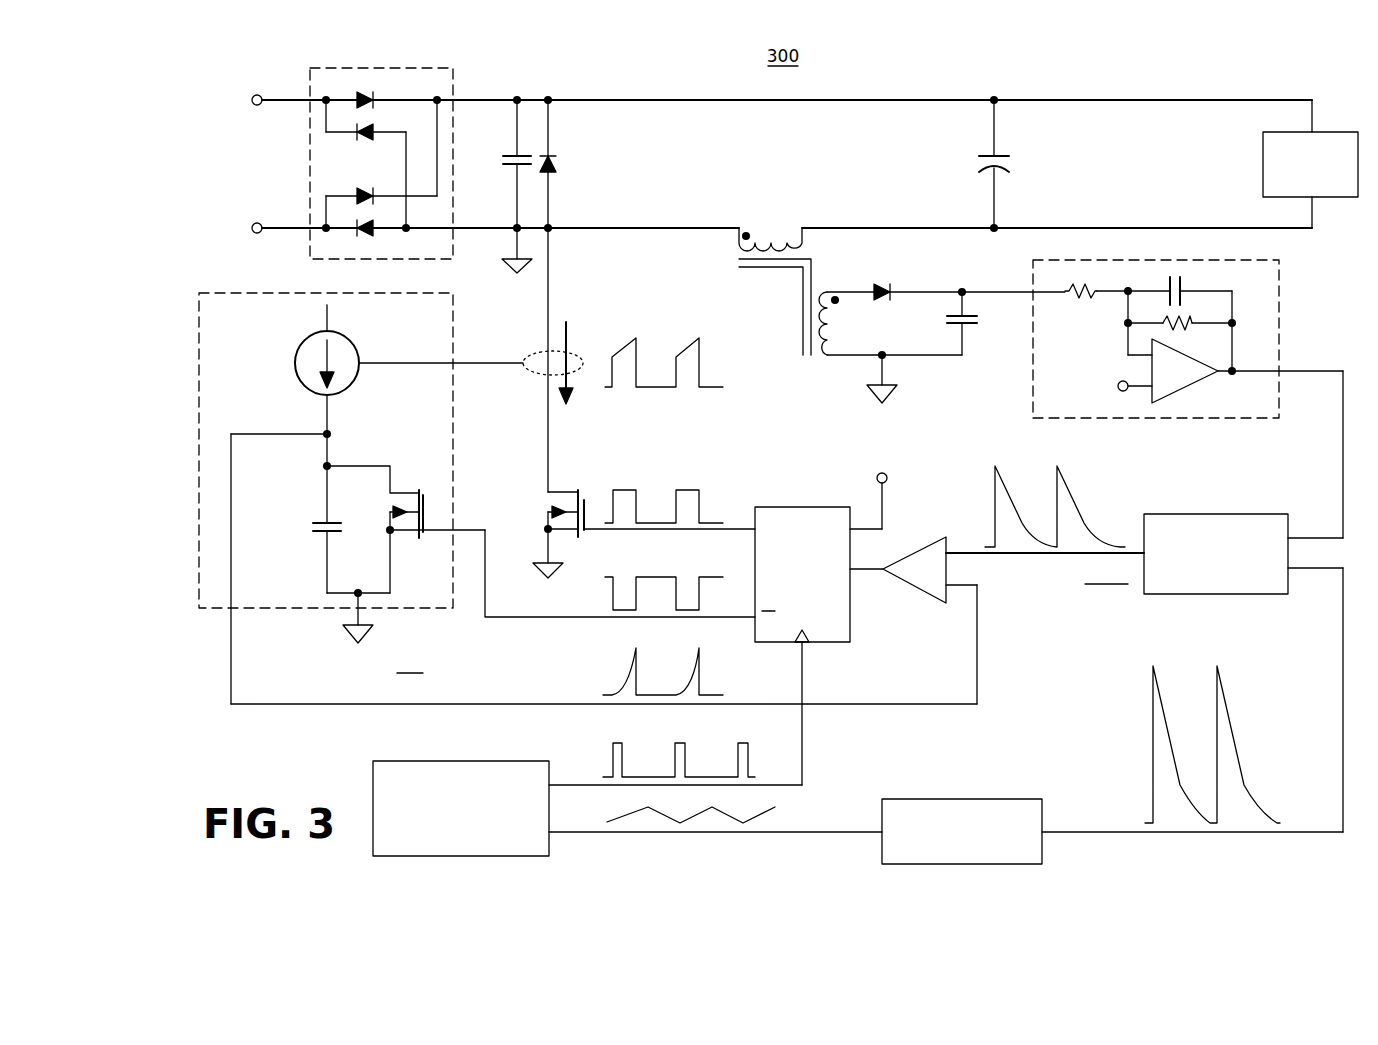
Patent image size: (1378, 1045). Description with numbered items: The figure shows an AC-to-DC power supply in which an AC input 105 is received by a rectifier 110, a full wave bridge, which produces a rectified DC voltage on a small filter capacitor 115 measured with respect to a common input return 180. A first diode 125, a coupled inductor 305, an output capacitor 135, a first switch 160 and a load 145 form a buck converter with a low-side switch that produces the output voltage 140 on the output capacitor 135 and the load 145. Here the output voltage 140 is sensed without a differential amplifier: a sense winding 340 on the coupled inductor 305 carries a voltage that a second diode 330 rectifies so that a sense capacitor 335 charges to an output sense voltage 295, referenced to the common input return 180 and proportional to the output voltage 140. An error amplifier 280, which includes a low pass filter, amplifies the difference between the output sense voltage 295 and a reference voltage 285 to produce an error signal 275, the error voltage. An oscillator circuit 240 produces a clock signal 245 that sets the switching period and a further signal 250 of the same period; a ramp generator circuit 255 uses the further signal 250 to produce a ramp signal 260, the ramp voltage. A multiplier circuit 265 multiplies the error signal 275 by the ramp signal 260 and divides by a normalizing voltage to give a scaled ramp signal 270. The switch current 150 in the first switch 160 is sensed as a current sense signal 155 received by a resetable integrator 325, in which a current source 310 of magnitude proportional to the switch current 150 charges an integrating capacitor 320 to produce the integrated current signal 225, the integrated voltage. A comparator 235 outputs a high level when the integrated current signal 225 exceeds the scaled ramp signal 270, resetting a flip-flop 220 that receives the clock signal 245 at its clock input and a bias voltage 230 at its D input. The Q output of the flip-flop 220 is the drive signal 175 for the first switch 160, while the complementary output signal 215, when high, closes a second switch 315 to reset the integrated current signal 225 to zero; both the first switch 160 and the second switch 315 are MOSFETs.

The AC input 105 is at (232, 175).
The rectifier 110 is at (300, 72).
The capacitor C1 115 is at (510, 148).
The diode D1 125 is at (562, 150).
The capacitor C2 135 is at (975, 150).
The output voltage VO 140 is at (1053, 154).
The load 145 is at (1258, 162).
The switch current ID 150 is at (573, 315).
The current sense signal 155 is at (473, 357).
The switch S1 160 is at (560, 480).
The drive signal 175 is at (703, 533).
The common input return 180 is at (854, 383).
The signal at complementary output 215 is at (545, 617).
The flip-flop 220 is at (800, 500).
The integrated current signal 225 is at (292, 445).
The bias voltage VBIAS 230 is at (900, 472).
The comparator 235 is at (920, 595).
The oscillator circuit 240 is at (370, 783).
The clock signal 245 is at (810, 740).
The signal 250 is at (808, 825).
The ramp generator circuit 255 is at (962, 795).
The ramp signal 260 is at (1105, 828).
The multiplier circuit 265 is at (1215, 600).
The scaled ramp signal 270 is at (1057, 558).
The error signal 275 is at (1340, 435).
The error amplifier 280 is at (1212, 422).
The reference voltage VREF 285 is at (1112, 378).
The output sense voltage VOS 295 is at (1002, 287).
The coupled inductor 305 is at (787, 283).
The current source 310 is at (298, 340).
The switch S2 315 is at (400, 483).
The capacitor C3 320 is at (335, 510).
The resetable integrator 325 is at (215, 622).
The diode D2 330 is at (873, 283).
The capacitor C4 335 is at (968, 340).
The sense winding 340 is at (838, 328).